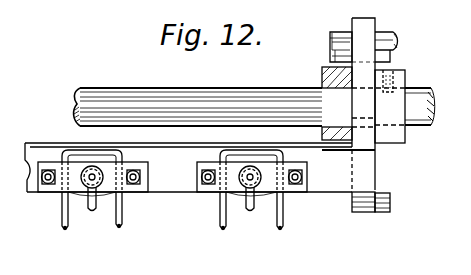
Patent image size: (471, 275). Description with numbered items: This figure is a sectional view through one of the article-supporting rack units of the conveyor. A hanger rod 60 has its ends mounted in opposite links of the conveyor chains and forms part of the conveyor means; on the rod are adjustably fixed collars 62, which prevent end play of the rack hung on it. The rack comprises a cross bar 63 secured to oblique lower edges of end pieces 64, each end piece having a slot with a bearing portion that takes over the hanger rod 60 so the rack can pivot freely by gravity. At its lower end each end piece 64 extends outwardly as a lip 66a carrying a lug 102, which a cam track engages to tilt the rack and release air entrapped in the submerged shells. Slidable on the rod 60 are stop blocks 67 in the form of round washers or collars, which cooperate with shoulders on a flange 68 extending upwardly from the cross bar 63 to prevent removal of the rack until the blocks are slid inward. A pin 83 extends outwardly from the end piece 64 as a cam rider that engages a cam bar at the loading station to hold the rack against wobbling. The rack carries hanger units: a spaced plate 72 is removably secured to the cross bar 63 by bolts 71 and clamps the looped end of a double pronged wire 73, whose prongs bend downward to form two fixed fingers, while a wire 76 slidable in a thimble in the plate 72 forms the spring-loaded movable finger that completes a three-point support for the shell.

The hanger rod 60 is at (96, 100).
The flange 68 is at (176, 137).
The stop blocks 67 is at (321, 74).
The fixed collars 62 is at (389, 133).
The pin 83 is at (381, 34).
The end pieces 64 is at (365, 86).
The cross bar 63 is at (173, 180).
The double pronged wire 73 is at (60, 218).
The bolts 71 is at (43, 186).
The plate 72 is at (116, 212).
The wire 76 is at (90, 212).
The lip 66a is at (358, 214).
The lugs 102 is at (383, 214).